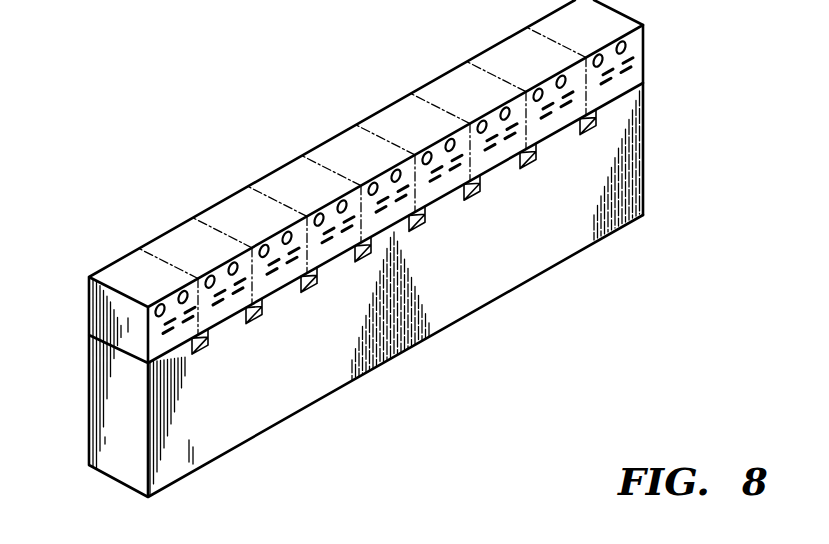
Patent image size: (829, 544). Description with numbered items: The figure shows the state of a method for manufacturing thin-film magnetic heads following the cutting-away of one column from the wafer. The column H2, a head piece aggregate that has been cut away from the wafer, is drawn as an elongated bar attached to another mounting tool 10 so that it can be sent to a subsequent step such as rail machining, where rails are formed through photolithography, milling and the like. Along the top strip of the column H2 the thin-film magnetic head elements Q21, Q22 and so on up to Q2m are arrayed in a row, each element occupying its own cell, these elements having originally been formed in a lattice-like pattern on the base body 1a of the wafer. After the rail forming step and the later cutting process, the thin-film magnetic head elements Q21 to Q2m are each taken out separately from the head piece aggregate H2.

The base body 1a is at (93, 313).
The mounting tool 10 is at (430, 330).
The column H2 is at (645, 48).
The thin-film magnetic head element Q21 is at (163, 285).
The thin-film magnetic head element Q22 is at (213, 254).
The thin-film magnetic head element Q2m is at (605, 33).